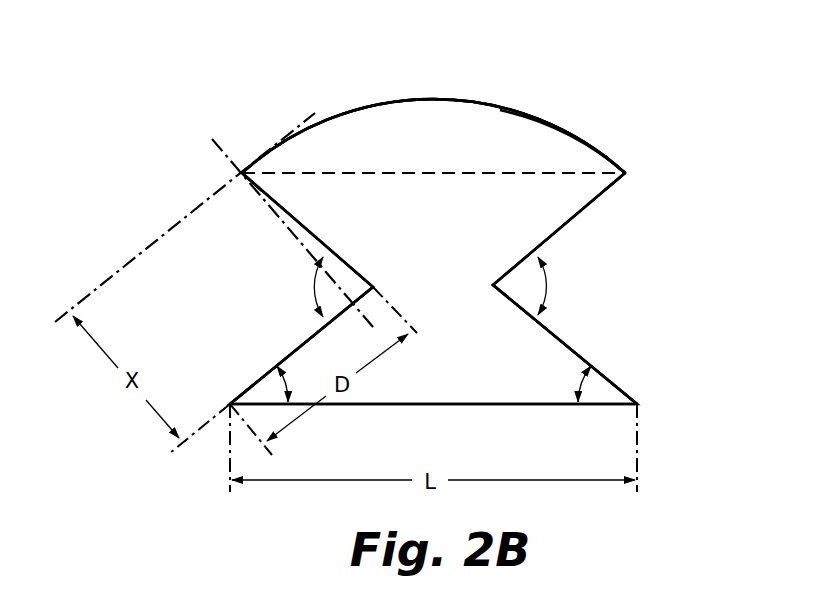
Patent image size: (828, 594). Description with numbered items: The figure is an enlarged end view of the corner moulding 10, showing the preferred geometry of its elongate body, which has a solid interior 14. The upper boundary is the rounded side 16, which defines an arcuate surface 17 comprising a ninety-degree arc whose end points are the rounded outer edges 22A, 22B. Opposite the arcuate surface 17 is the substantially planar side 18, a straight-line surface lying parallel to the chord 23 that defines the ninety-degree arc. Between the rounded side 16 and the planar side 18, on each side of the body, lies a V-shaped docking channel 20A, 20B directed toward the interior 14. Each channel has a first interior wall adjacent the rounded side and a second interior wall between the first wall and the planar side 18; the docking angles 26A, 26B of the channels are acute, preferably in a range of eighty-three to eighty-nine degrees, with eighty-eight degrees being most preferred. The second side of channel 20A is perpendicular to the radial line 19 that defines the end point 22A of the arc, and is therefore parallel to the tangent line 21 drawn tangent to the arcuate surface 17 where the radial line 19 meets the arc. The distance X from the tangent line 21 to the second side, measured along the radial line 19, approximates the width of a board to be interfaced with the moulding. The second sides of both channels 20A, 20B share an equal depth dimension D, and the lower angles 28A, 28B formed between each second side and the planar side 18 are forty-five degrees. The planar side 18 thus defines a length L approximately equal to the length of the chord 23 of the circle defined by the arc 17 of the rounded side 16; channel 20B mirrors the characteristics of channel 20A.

The corner moulding 10 is at (450, 72).
The solid interior 14 is at (422, 240).
The first rounded side 16 is at (598, 141).
The arcuate surface 17 is at (503, 110).
The second substantially planar side 18 is at (494, 406).
The radial line 19 is at (285, 227).
The V-shaped docking channel 20A is at (246, 272).
The V-shaped docking channel 20B is at (620, 242).
The tangent line 21 is at (143, 252).
The rounded outer edge 22A is at (242, 173).
The rounded outer edge 22B is at (625, 173).
The chord 23 is at (382, 171).
The docking angle 26A is at (312, 289).
The docking angle 26B is at (550, 283).
The lower angle 28A is at (321, 369).
The lower angle 28B is at (572, 382).